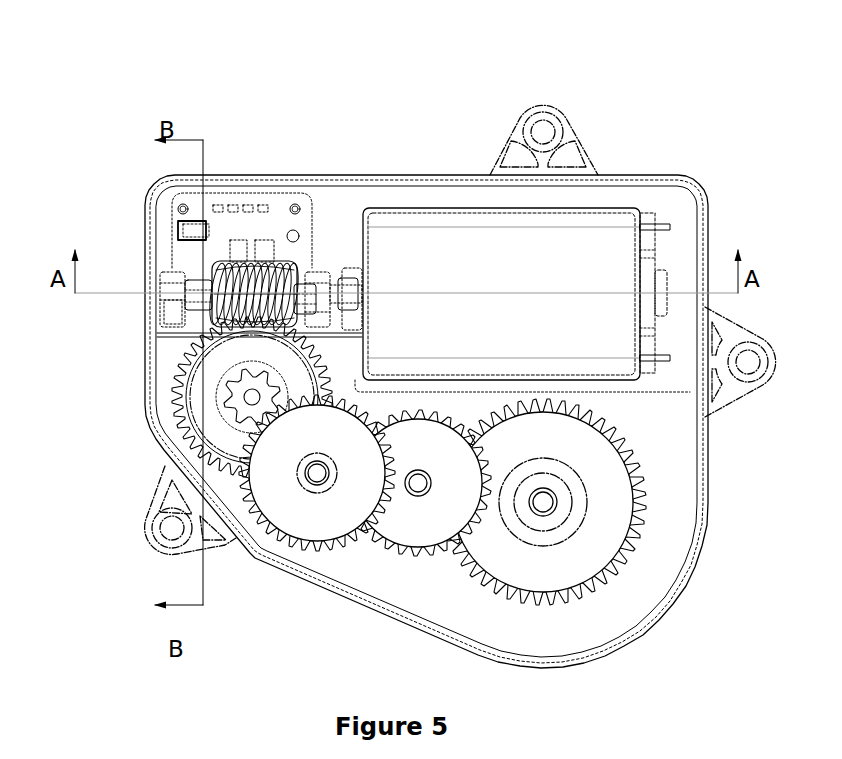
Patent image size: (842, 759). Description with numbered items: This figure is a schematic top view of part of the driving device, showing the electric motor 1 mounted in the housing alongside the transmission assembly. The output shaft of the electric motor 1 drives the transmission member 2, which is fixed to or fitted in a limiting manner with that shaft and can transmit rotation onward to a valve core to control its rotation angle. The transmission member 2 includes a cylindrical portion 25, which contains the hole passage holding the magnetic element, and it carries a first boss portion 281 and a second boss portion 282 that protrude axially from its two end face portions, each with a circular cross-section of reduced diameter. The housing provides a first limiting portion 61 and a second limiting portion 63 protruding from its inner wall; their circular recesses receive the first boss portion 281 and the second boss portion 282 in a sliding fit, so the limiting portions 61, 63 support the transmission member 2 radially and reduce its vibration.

The electric motor 1 is at (567, 268).
The transmission member 2 is at (243, 267).
The cylindrical portion 25 is at (192, 277).
The first limiting portion 61 is at (163, 267).
The second limiting portion 63 is at (326, 264).
The first boss portion 281 is at (173, 300).
The second boss portion 282 is at (317, 287).